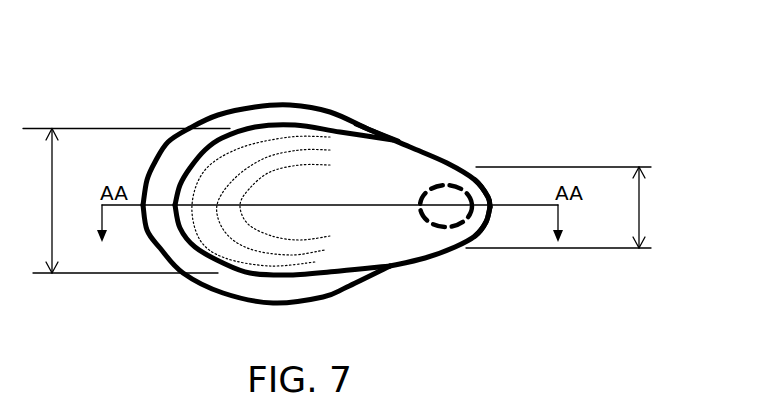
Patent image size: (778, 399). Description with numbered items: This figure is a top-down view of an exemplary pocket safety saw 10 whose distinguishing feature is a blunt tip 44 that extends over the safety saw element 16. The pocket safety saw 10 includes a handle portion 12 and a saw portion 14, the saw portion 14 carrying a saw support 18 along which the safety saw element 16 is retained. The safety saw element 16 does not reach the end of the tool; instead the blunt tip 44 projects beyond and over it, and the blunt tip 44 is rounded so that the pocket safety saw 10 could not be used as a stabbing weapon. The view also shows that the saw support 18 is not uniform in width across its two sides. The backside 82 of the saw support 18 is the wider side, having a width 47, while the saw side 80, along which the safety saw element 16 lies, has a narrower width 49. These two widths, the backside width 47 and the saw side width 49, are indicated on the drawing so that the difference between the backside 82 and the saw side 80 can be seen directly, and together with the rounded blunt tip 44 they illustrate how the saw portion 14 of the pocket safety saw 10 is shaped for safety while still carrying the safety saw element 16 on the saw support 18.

The pocket safety saw 10 is at (240, 101).
The handle portion 12 is at (225, 286).
The saw portion 14 is at (415, 247).
The safety saw element 16 is at (441, 190).
The saw support 18 is at (370, 153).
The blunt tip 44 is at (355, 167).
The width of the backside 47 is at (126, 201).
The width of the saw side 49 is at (580, 207).
The saw side 80 is at (491, 205).
The backside 82 is at (188, 186).